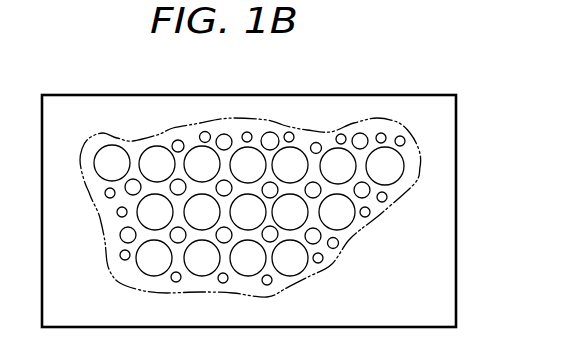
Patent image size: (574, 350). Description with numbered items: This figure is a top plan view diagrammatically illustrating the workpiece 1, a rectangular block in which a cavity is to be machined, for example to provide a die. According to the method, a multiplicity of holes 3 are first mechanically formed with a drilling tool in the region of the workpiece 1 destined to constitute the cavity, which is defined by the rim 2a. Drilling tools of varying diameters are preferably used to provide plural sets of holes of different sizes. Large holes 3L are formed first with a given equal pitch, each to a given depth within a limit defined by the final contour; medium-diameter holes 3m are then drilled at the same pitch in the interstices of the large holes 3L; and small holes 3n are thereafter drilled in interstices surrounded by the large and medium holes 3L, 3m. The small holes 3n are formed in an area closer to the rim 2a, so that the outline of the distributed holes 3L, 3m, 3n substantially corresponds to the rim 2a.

The workpiece 1 is at (456, 160).
The rim 2a is at (383, 212).
The holes 3 is at (113, 145).
The large holes 3L is at (197, 146).
The medium-diameter holes 3m is at (272, 132).
The small holes 3n is at (318, 142).